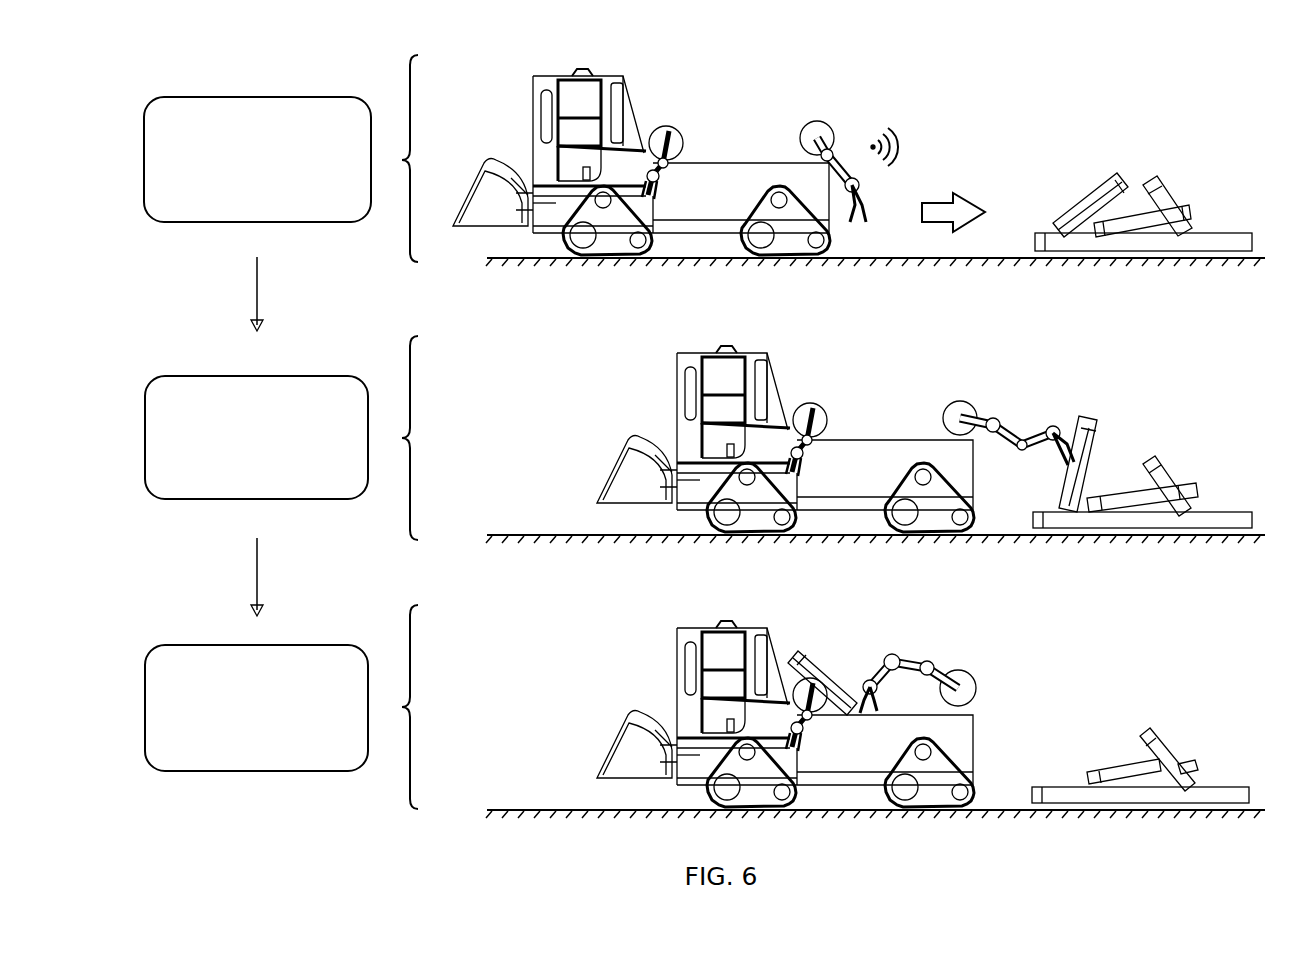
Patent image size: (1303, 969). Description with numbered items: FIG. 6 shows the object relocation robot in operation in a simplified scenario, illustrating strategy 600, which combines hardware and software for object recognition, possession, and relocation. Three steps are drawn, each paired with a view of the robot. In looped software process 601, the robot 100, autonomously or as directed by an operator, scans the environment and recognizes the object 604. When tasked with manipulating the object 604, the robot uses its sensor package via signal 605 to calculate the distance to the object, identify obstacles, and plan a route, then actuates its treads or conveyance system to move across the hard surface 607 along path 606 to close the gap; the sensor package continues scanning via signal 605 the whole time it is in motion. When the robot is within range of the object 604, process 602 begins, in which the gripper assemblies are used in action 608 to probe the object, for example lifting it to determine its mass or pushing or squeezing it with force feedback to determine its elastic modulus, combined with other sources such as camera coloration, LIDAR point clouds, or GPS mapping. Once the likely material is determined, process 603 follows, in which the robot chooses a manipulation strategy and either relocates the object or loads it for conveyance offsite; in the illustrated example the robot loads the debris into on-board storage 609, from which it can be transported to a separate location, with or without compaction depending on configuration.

The strategy 600 is at (286, 55).
The looped software process 601 is at (288, 209).
The process 602 is at (288, 488).
The process 603 is at (288, 759).
The robot 100 is at (712, 125).
The object 604 is at (1137, 165).
The signal 605 is at (878, 120).
The path 606 is at (960, 185).
The hard surface 607 is at (1000, 262).
The action 608 is at (1057, 420).
The on-board storage 609 is at (858, 678).